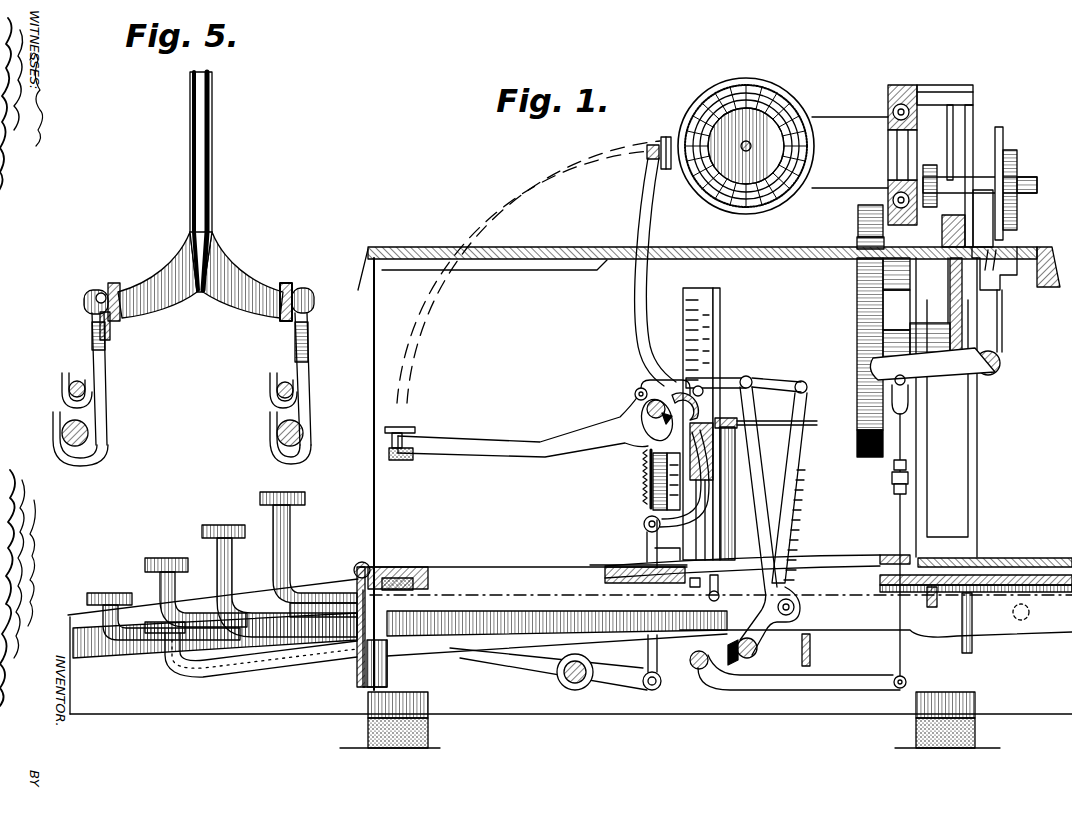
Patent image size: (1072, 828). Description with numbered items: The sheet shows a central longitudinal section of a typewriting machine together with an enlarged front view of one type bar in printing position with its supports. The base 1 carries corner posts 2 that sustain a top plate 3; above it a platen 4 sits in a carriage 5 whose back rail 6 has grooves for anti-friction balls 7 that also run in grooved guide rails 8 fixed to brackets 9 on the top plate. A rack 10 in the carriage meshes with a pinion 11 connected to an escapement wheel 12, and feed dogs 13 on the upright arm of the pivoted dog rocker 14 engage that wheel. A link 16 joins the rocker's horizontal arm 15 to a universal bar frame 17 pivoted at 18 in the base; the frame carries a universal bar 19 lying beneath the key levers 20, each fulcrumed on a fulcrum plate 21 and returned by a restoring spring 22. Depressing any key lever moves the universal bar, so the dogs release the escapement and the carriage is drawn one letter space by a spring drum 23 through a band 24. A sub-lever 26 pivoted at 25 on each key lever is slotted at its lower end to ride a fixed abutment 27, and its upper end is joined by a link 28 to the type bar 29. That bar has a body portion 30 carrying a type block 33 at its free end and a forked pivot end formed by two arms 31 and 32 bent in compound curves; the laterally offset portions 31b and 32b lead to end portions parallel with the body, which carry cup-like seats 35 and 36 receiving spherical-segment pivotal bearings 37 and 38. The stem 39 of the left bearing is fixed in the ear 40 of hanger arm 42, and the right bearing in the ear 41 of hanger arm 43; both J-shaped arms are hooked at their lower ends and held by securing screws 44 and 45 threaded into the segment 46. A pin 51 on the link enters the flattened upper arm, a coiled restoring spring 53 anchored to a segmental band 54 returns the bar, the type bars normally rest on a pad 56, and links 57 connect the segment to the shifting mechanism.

In FIG. 1, the base 1 is at (661, 708).
In FIG. 1, the corner posts 2 is at (975, 506).
In FIG. 1, the top plate 3 is at (812, 259).
In FIG. 1, the platen 4 is at (793, 96).
In FIG. 1, the carriage 5 is at (840, 118).
In FIG. 1, the back rail 6 is at (890, 130).
In FIG. 1, the anti-friction balls 7 is at (892, 110).
In FIG. 1, the guide rails 8 is at (905, 86).
In FIG. 1, the brackets 9 is at (966, 88).
In FIG. 1, the rack 10 is at (936, 166).
In FIG. 1, the pinion 11 is at (926, 172).
In FIG. 1, the escapement wheel 12 is at (998, 128).
In FIG. 1, the feed dogs 13 is at (994, 268).
In FIG. 1, the dog rocker 14 is at (992, 374).
In FIG. 1, the horizontally disposed arm 15 is at (949, 378).
In FIG. 1, the link 16 is at (898, 535).
In FIG. 1, the universal bar frame 17 is at (860, 690).
In FIG. 1, the pivot 18 is at (697, 669).
In FIG. 1, the universal bar 19 is at (810, 648).
In FIG. 1, the key levers 20 is at (472, 598).
In FIG. 1, the fulcrum plate 21 is at (1022, 562).
In FIG. 1, the restoring spring 22 is at (801, 558).
In FIG. 1, the spring drum 23 is at (883, 357).
In FIG. 1, the band 24 is at (858, 223).
In FIG. 1, the pivot 25 is at (795, 608).
In FIG. 1, the sub-lever 26 is at (756, 443).
In FIG. 1, the fixed abutment 27 is at (752, 646).
In FIG. 1, the link 28 is at (740, 380).
In FIG. 5, the type bar 29 is at (200, 267).
In FIG. 1, the type bar 29 is at (650, 336).
In FIG. 5, the body portion 30 is at (211, 120).
In FIG. 1, the body portion 30 is at (580, 440).
In FIG. 5, the arm 31 is at (110, 322).
In FIG. 1, the arm 31 is at (658, 398).
In FIG. 5, the downwardly and laterally extending portion 31b is at (155, 284).
In FIG. 1, the arm 32 is at (648, 452).
In FIG. 5, the upwardly and laterally extending portion 32b is at (242, 288).
In FIG. 1, the type block 33 is at (666, 170).
In FIG. 5, the seat 35 is at (130, 312).
In FIG. 5, the seat 36 is at (272, 314).
In FIG. 5, the pivotal bearing 37 is at (112, 290).
In FIG. 5, the pivotal bearing 38 is at (86, 296).
In FIG. 5, the stem 39 is at (98, 294).
In FIG. 5, the ear 40 is at (105, 338).
In FIG. 5, the ear 41 is at (286, 314).
In FIG. 5, the hanger arm 42 is at (98, 425).
In FIG. 5, the hanger arm 43 is at (92, 341).
In FIG. 5, the securing screw 44 is at (76, 448).
In FIG. 5, the securing screw 45 is at (74, 378).
In FIG. 1, the segment 46 is at (713, 312).
In FIG. 1, the pin 51 is at (638, 388).
In FIG. 1, the restoring spring 53 is at (654, 485).
In FIG. 1, the segmental band 54 is at (644, 525).
In FIG. 1, the type rest 56 is at (407, 463).
In FIG. 1, the links 57 is at (654, 656).